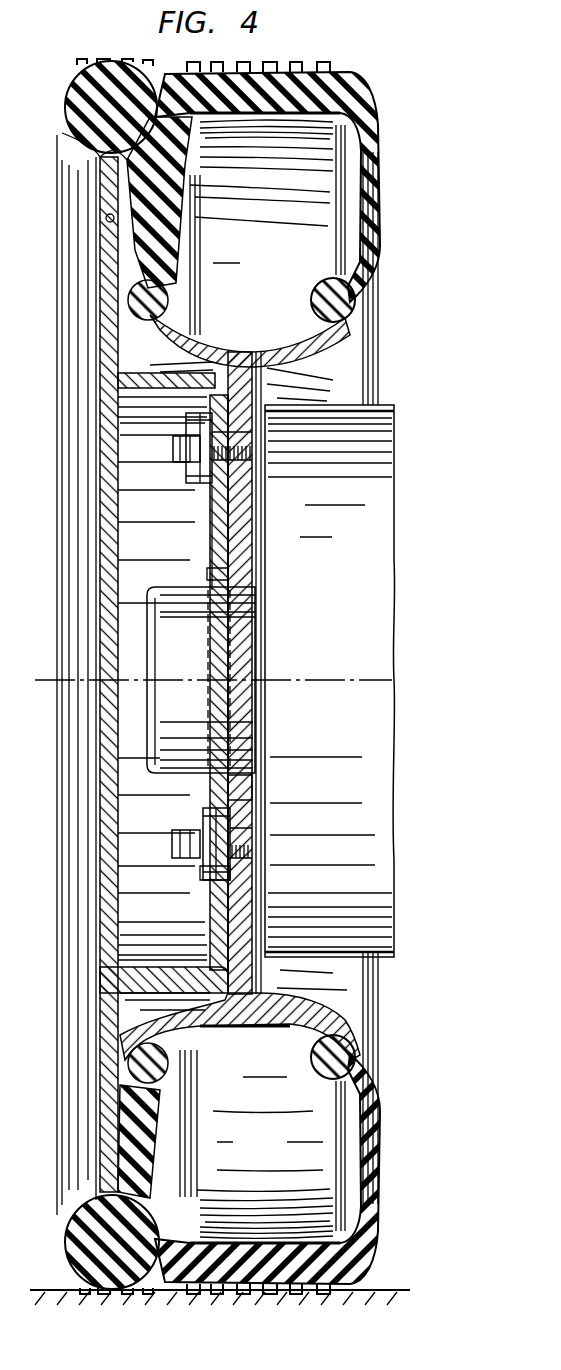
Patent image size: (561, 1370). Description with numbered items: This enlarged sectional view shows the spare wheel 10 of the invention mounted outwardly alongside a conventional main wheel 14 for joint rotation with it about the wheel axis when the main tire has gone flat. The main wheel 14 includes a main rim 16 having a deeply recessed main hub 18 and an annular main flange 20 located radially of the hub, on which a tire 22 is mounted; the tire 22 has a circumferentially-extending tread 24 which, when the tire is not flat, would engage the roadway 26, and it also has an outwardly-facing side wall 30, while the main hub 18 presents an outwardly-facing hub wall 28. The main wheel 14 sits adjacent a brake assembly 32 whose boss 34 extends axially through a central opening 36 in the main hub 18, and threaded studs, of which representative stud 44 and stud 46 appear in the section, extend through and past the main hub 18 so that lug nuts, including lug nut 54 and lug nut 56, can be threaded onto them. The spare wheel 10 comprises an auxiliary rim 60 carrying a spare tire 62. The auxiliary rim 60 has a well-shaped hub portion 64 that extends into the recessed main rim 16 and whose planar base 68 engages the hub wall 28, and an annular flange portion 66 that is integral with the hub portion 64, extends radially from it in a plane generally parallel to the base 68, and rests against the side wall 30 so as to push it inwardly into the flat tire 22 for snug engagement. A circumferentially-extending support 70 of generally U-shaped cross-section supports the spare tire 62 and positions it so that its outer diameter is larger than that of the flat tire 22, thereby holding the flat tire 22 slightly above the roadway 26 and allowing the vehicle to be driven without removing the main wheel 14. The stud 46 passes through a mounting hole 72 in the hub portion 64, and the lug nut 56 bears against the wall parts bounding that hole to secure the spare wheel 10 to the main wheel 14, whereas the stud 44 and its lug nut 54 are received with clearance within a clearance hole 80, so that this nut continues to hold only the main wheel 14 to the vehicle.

The spare wheel 10 is at (50, 476).
The main wheel 14 is at (392, 304).
The main rim 16 is at (311, 342).
The main hub 18 is at (255, 507).
The annular main flange 20 is at (285, 346).
The tire 22 is at (366, 114).
The tread 24 is at (258, 70).
The roadway 26 is at (50, 1288).
The hub wall 28 is at (222, 522).
The side wall 30 is at (112, 220).
The brake assembly 32 is at (322, 571).
The boss 34 is at (160, 631).
The central opening 36 is at (248, 790).
The stud 44 is at (176, 840).
The stud 46 is at (176, 456).
The lug nut 54 is at (206, 872).
The lug nut 56 is at (190, 481).
The auxiliary rim 60 is at (97, 357).
The spare tire 62 is at (72, 78).
The hub portion 64 is at (215, 538).
The annular flange portion 66 is at (106, 233).
The planar base 68 is at (232, 550).
The support 70 is at (116, 150).
The mounting hole 72 is at (218, 492).
The clearance hole 80 is at (210, 802).